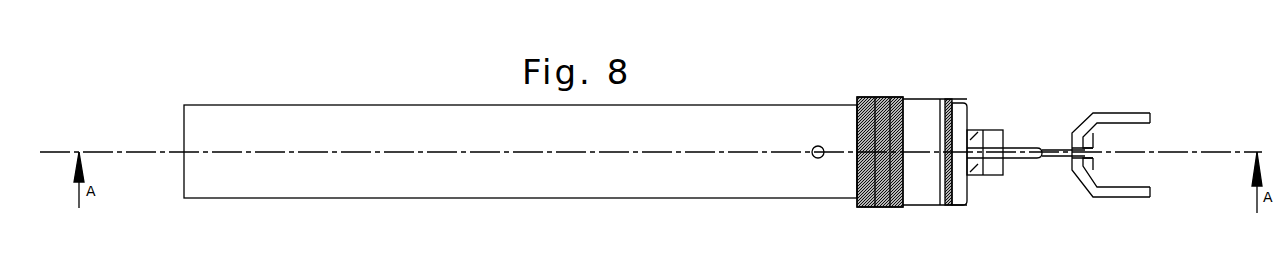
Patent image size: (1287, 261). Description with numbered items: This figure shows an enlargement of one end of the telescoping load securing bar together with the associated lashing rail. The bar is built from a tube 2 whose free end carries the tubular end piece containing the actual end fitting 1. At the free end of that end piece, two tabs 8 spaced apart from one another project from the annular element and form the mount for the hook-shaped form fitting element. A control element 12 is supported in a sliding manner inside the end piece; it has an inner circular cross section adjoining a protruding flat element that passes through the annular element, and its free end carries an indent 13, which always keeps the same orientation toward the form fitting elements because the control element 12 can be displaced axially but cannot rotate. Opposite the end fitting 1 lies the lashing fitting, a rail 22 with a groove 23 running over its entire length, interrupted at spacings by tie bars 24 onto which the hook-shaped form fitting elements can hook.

The end fitting 1 is at (992, 80).
The tube 2 is at (713, 117).
The tabs 8 is at (982, 127).
The control element 12 is at (1018, 147).
The indent 13 is at (958, 205).
The rail 22 is at (1140, 113).
The groove 23 is at (1074, 160).
The tie bar 24 is at (1104, 154).